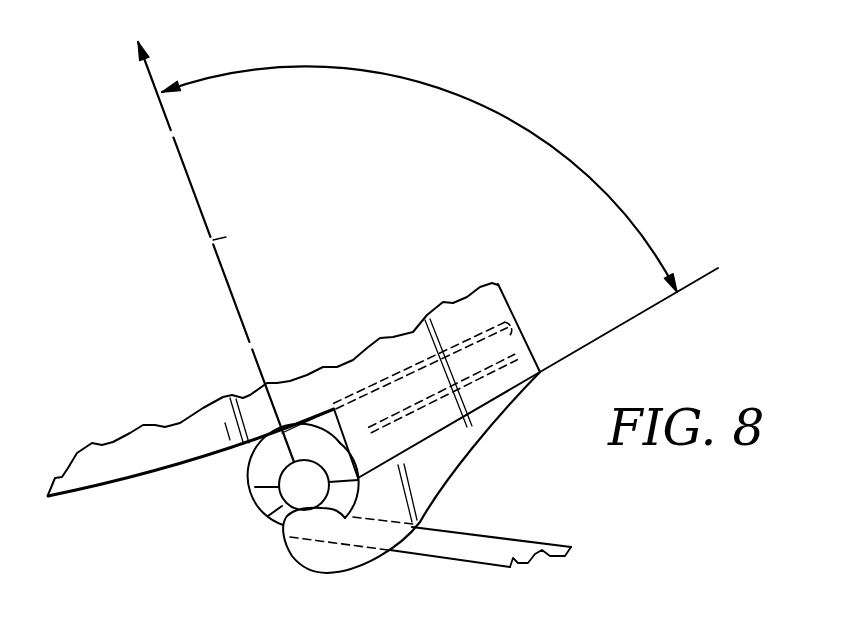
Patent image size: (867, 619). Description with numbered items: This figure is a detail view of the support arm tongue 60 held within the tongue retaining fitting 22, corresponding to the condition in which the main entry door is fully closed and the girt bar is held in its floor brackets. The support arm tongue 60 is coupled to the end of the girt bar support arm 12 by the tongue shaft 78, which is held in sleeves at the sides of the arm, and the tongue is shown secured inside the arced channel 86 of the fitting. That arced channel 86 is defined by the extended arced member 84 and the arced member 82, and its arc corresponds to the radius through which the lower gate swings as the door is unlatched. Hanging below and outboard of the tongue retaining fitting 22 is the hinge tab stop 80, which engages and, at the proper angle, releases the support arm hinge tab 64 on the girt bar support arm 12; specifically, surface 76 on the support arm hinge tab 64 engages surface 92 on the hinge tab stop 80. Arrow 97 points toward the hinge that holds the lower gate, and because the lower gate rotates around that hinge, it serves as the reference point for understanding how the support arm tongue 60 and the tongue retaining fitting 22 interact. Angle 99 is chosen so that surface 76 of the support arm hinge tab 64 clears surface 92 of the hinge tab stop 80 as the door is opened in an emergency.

The girt bar support arm 12 is at (520, 540).
The tongue retaining fitting 22 is at (530, 412).
The support arm tongue 60 is at (522, 330).
The support arm hinge tab 64 is at (260, 460).
The surface 76 is at (325, 465).
The tongue shaft 78 is at (260, 515).
The hinge tab stop 80 is at (433, 503).
The arced member 82 is at (532, 356).
The extended arced member 84 is at (497, 288).
The arced channel 86 is at (518, 330).
The surface 92 is at (295, 552).
The arrow 97 is at (215, 238).
The angle 99 is at (567, 158).